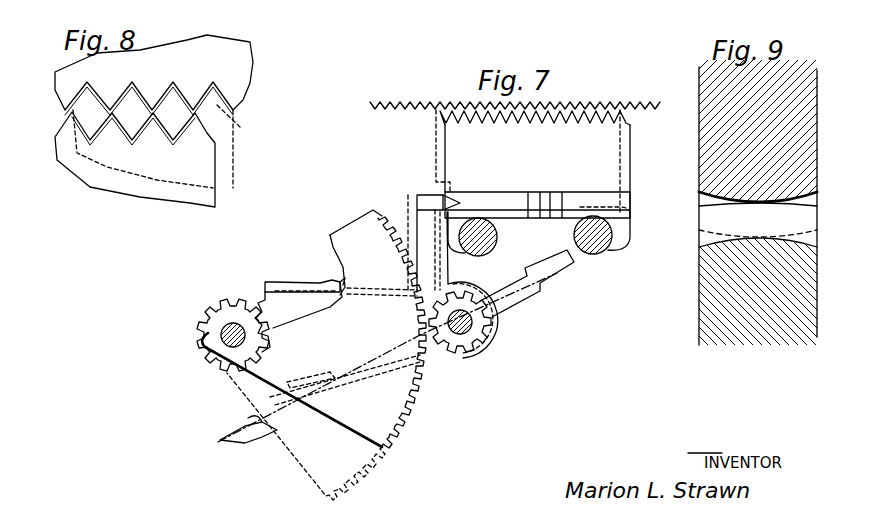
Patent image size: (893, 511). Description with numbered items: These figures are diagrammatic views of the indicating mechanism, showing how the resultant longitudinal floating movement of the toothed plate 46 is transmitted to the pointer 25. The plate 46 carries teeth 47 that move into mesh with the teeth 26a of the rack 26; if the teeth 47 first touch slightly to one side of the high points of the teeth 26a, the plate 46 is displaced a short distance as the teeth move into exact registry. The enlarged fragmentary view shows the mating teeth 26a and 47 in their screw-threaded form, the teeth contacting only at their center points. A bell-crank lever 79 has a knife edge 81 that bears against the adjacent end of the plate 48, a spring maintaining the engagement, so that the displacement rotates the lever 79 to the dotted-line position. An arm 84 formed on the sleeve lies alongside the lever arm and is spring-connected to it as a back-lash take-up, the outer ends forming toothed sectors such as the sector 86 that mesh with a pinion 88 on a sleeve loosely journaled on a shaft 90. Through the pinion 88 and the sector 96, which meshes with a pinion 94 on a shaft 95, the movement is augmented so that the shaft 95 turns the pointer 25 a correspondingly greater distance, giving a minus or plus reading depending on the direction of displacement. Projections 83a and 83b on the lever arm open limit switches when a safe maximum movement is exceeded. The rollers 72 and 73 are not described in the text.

In FIG. 7, the pointer 25 is at (257, 438).
In FIG. 8, the rack 26 is at (247, 80).
In FIG. 7, the rack 26 is at (424, 100).
In FIG. 9, the rack 26 is at (705, 160).
In FIG. 8, the teeth on rack 26a is at (240, 103).
In FIG. 7, the teeth on rack 26a is at (437, 112).
In FIG. 9, the teeth on rack 26a is at (699, 200).
In FIG. 8, the toothed plate 46 is at (212, 170).
In FIG. 7, the toothed plate 46 is at (445, 162).
In FIG. 9, the toothed plate 46 is at (708, 270).
In FIG. 8, the teeth of plate 47 is at (200, 135).
In FIG. 7, the teeth of plate 47 is at (573, 110).
In FIG. 9, the teeth of plate 47 is at (699, 236).
In FIG. 7, the plate 48 is at (580, 196).
In FIG. 7, the roller bracket arm 72 is at (448, 250).
In FIG. 7, the roller 73 is at (498, 243).
In FIG. 7, the bell-crank lever 79 is at (418, 222).
In FIG. 7, the knife edge 81 is at (461, 197).
In FIG. 7, the projection on lever arm 83a is at (347, 282).
In FIG. 7, the projection on lever arm 83b is at (340, 377).
In FIG. 7, the arm 84 is at (297, 287).
In FIG. 7, the toothed sector 86 is at (268, 297).
In FIG. 7, the pinion 88 is at (211, 309).
In FIG. 7, the shaft 90 is at (208, 337).
In FIG. 7, the pinion 94 is at (447, 360).
In FIG. 7, the shaft 95 is at (474, 327).
In FIG. 7, the sector 96 is at (238, 393).